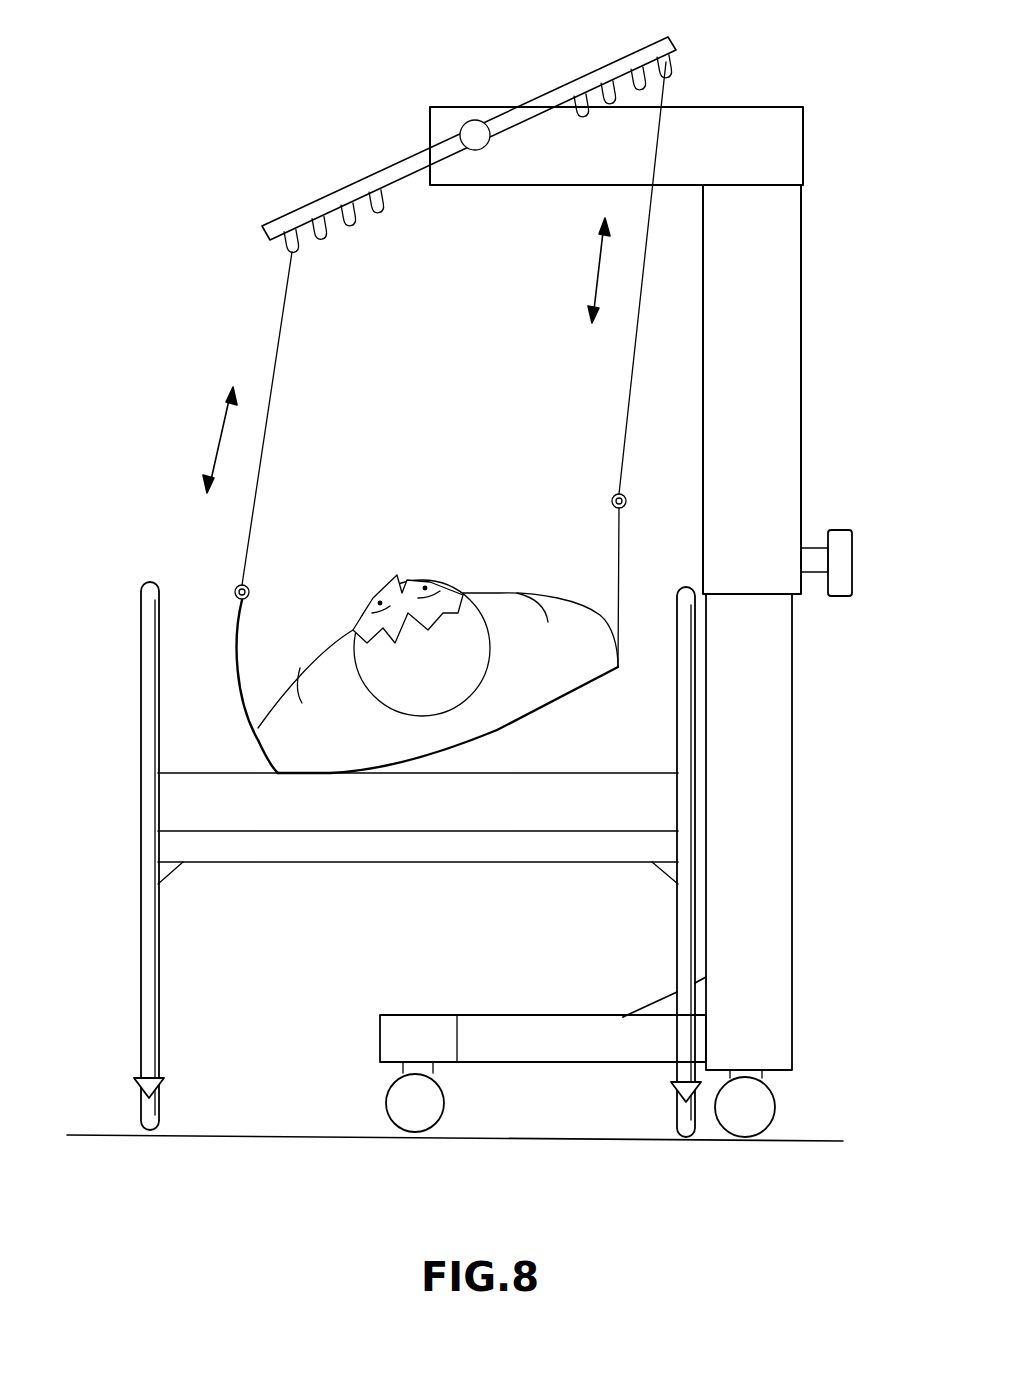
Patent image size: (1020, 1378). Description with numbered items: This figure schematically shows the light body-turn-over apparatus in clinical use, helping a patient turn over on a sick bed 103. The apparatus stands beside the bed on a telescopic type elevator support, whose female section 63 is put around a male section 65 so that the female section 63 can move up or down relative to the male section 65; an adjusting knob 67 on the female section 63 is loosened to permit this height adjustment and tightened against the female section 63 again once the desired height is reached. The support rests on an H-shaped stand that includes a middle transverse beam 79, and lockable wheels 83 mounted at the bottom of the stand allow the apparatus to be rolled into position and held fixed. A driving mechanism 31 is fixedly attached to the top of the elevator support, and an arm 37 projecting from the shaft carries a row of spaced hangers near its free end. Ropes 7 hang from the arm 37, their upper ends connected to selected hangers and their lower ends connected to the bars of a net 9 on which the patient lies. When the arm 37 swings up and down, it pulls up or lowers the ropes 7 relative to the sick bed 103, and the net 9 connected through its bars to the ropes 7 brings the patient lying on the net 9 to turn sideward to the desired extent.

The driving mechanism 31 is at (450, 107).
The arm 37 is at (340, 197).
The rope 7 is at (283, 310).
The female section 63 is at (738, 453).
The adjusting knob 67 is at (850, 565).
The male section 65 is at (735, 878).
The sick bed 103 is at (210, 806).
The middle transverse beam 79 is at (495, 1042).
The lockable wheel 83 is at (414, 1107).
The net 9 is at (232, 647).